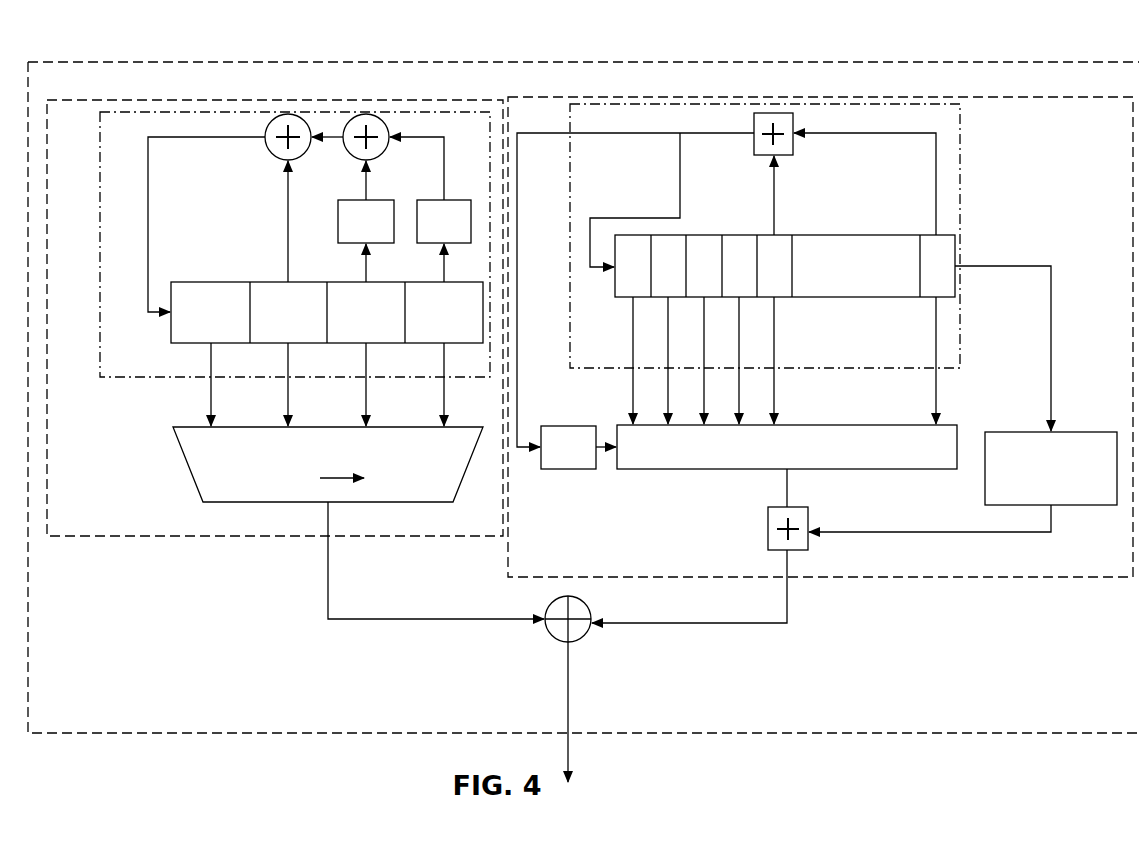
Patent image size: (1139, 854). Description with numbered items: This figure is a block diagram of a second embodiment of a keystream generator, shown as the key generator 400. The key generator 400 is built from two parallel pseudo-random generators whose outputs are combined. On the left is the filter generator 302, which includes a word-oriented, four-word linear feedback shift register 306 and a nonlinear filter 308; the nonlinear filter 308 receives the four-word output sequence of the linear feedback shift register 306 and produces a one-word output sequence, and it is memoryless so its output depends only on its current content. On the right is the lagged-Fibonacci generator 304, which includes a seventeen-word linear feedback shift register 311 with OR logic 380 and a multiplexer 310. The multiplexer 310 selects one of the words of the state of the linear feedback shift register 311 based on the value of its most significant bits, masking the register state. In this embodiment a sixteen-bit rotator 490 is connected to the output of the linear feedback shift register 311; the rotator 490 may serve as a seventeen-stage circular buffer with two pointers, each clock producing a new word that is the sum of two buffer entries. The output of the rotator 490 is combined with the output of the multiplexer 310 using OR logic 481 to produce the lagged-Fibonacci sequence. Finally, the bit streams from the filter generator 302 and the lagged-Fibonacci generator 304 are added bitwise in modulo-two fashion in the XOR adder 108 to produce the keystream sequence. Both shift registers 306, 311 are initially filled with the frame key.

The modulo-2 adder 108 is at (584, 637).
The filter generator 302 is at (228, 537).
The lagged-Fibonacci generator 304 is at (1000, 578).
The linear feedback shift register 306 is at (158, 378).
The nonlinear filter 308 is at (183, 467).
The multiplexer 310 is at (898, 469).
The linear feedback shift register 311 is at (900, 370).
The OR logic 380 is at (790, 115).
The key generator 400 is at (778, 735).
The OR logic 481 is at (808, 550).
The 16-bit rotator 490 is at (1080, 506).